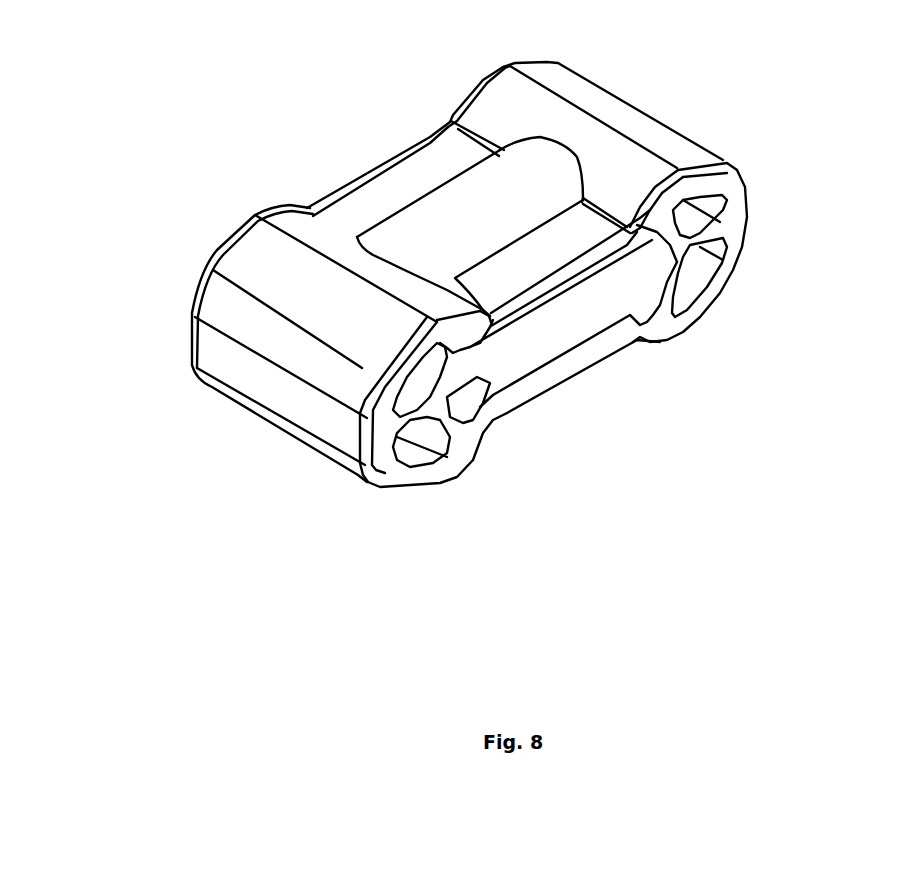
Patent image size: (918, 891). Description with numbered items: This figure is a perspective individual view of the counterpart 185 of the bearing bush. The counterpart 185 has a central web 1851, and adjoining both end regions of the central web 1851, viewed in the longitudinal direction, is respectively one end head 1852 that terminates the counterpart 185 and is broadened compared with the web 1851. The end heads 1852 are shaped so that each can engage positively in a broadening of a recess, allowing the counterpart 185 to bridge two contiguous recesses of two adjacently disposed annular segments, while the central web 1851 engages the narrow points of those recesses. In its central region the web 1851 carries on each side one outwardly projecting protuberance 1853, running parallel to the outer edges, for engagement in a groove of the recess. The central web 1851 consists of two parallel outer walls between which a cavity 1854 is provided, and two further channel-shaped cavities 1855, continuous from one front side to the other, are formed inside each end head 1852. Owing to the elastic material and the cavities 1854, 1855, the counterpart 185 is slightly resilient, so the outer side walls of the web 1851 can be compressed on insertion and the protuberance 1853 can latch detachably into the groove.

The counterpart 185 is at (415, 130).
The central web 1851 is at (540, 257).
The end head 1852 is at (290, 287).
The protuberance 1853 is at (470, 202).
The cavity 1854 is at (538, 347).
The channel-shaped cavities 1855 is at (697, 220).